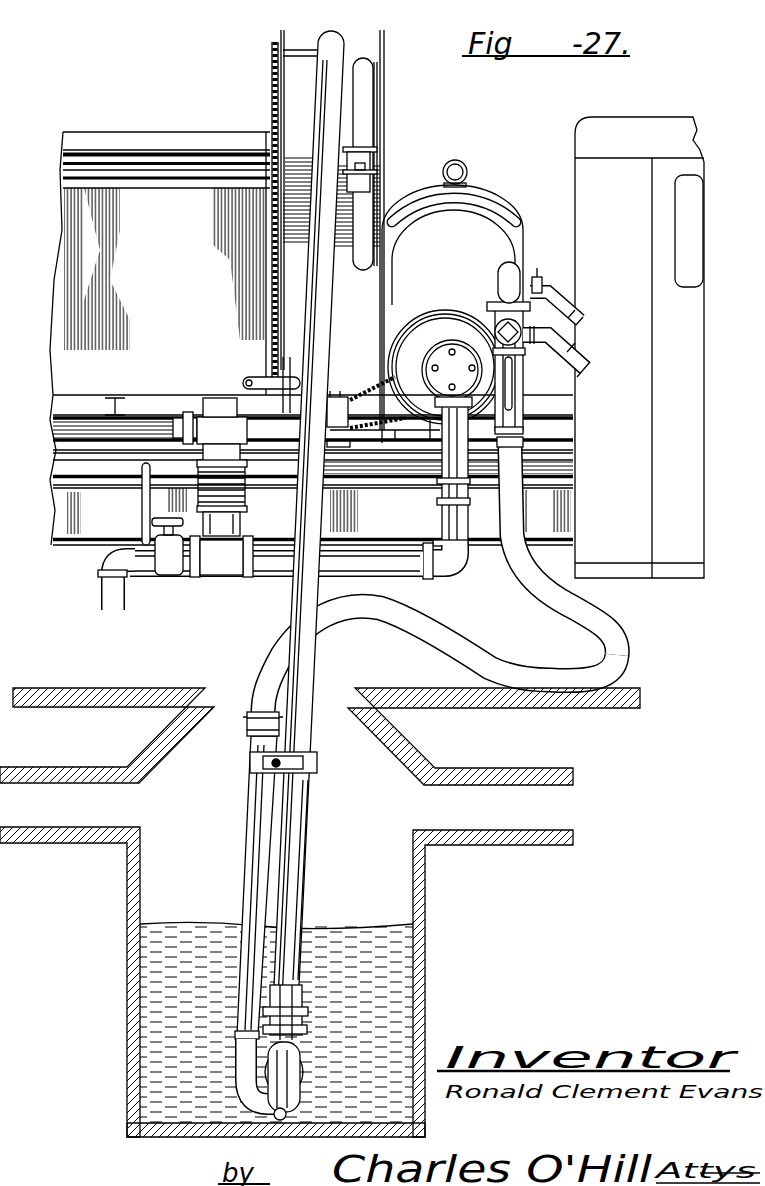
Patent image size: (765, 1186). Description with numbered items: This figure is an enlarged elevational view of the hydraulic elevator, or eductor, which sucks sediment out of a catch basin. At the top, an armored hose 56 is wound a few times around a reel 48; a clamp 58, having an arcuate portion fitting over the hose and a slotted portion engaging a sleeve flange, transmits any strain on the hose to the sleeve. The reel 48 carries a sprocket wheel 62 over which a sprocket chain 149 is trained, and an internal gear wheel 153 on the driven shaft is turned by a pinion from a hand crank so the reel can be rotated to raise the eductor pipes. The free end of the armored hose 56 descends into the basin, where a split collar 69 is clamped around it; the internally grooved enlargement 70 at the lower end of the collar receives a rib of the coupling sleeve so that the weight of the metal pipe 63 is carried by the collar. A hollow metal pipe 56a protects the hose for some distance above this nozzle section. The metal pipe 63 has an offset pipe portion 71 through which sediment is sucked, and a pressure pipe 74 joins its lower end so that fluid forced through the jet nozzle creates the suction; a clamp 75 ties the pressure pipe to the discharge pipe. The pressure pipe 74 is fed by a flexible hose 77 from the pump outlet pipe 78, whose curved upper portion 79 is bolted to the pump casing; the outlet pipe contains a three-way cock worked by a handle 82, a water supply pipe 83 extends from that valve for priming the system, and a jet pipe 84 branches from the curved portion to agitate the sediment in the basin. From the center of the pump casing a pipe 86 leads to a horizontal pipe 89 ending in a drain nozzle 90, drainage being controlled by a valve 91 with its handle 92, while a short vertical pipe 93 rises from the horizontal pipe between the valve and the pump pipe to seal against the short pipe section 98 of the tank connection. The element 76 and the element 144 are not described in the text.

The reel 48 is at (385, 68).
The armored hose 56 is at (320, 288).
The hollow metal pipe 56a is at (300, 812).
The clamp 58 is at (381, 173).
The sprocket wheel 62 is at (270, 54).
The metal pipe 63 is at (300, 1044).
The split collar 69 is at (302, 1006).
The internally grooved enlargement 70 is at (127, 1011).
The offset pipe portion 71 is at (290, 1120).
The pressure pipe 74 is at (255, 876).
The clamp 75 is at (318, 758).
The coupling 76 is at (267, 770).
The flexible hose 77 is at (358, 618).
The pump outlet pipe 78 is at (513, 418).
The curved upper portion 79 is at (515, 268).
The handle 82 is at (508, 385).
The water supply pipe 83 is at (580, 357).
The jet pipe 84 is at (575, 300).
The pipe 86 is at (450, 448).
The horizontal pipe 89 is at (397, 577).
The drain nozzle 90 is at (107, 593).
The valve 91 is at (163, 565).
The handle 92 is at (142, 500).
The short vertical pipe 93 is at (219, 522).
The short pipe section 98 is at (223, 452).
The motor 144 is at (350, 392).
The sprocket chain 149 is at (268, 232).
The internal gear wheel 153 is at (248, 377).